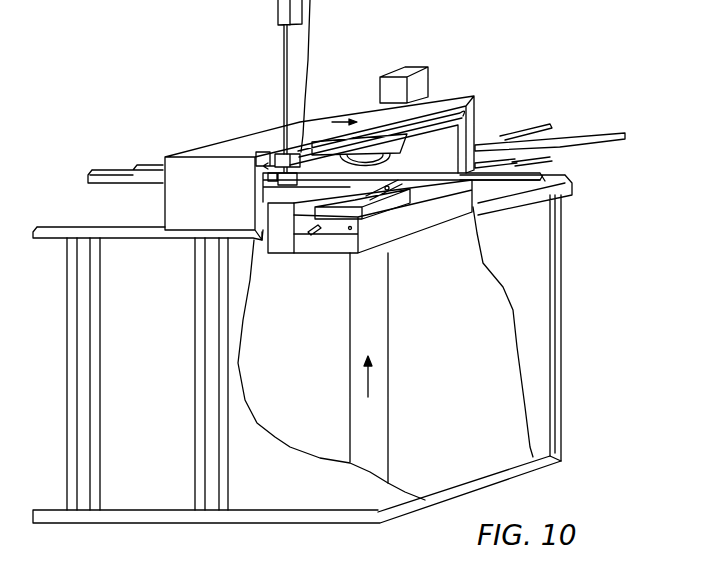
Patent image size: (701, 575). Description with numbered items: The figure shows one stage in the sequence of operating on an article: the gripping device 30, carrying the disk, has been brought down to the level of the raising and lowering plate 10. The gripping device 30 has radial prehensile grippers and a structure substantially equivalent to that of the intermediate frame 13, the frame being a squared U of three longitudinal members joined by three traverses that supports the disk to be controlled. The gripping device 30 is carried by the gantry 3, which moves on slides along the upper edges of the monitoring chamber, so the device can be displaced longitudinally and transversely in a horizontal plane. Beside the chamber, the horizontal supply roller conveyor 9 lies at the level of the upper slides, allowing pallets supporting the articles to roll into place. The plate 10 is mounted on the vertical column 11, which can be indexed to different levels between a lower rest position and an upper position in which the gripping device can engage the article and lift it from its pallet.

The gantry 3 is at (248, 142).
The gripping device 30 is at (371, 148).
The supply roller conveyor 9 is at (523, 138).
The raising and lowering plate 10 is at (285, 240).
The intermediate frame 13 is at (436, 208).
The vertical column 11 is at (378, 365).